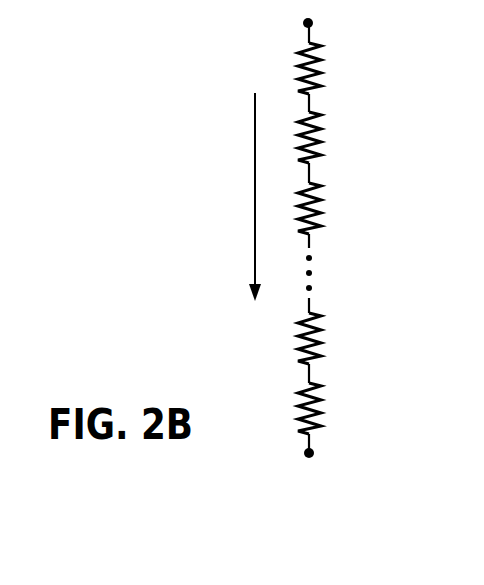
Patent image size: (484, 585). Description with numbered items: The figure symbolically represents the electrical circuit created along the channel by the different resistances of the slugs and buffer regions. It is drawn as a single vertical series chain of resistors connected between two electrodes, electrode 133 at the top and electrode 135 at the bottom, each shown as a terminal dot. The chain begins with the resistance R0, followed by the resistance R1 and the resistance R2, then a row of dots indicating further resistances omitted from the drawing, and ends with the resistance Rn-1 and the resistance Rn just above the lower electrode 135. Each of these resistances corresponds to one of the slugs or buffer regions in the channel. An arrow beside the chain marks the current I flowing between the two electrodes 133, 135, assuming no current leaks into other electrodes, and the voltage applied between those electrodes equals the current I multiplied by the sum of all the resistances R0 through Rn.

The electrode 133 is at (314, 22).
The electrode 135 is at (304, 452).
The resistance R0 is at (329, 68).
The resistance R1 is at (329, 137).
The resistance R2 is at (329, 208).
The resistance Rn-1 is at (337, 338).
The resistance Rn is at (329, 408).
The current I is at (246, 197).